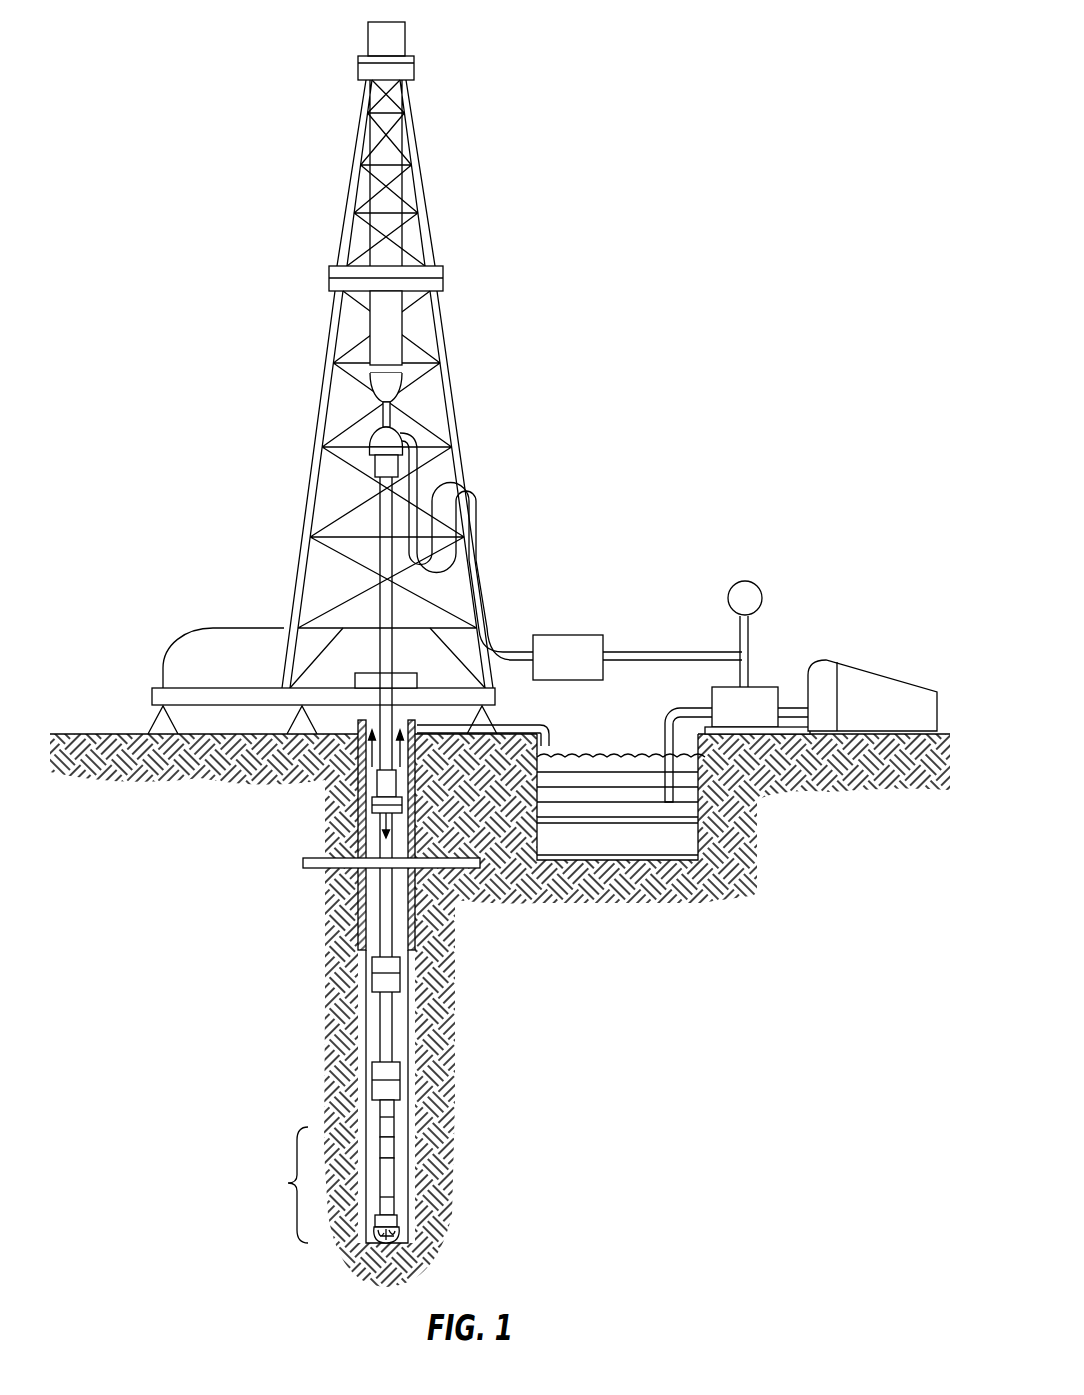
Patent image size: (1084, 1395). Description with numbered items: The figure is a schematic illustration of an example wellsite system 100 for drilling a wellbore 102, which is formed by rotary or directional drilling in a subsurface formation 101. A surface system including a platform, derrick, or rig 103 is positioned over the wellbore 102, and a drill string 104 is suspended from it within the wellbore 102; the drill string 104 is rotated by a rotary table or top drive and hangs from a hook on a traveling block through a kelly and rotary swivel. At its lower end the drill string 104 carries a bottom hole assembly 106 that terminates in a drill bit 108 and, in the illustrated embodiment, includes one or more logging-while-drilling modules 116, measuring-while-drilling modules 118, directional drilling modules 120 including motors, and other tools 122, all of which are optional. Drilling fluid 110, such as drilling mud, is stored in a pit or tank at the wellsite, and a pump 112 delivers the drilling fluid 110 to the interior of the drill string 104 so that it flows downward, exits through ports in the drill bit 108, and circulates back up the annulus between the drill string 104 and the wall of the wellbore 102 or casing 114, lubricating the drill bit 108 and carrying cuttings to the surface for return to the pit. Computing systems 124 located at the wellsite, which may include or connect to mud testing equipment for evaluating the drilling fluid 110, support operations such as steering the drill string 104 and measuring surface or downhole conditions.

The wellsite system 100 is at (545, 64).
The subsurface formation 101 is at (510, 777).
The wellbore 102 is at (440, 1020).
The rig 103 is at (320, 392).
The drill string 104 is at (395, 932).
The bottom hole assembly 106 is at (288, 1183).
The drill bit 108 is at (405, 1238).
The drilling fluid 110 is at (632, 851).
The pump 112 is at (584, 671).
The casing 114 is at (416, 907).
The logging-while-drilling module 116 is at (393, 1103).
The measuring-while-drilling module 118 is at (388, 1130).
The directional drilling module 120 is at (388, 1187).
The other tools 122 is at (388, 1153).
The computing systems 124 is at (890, 717).